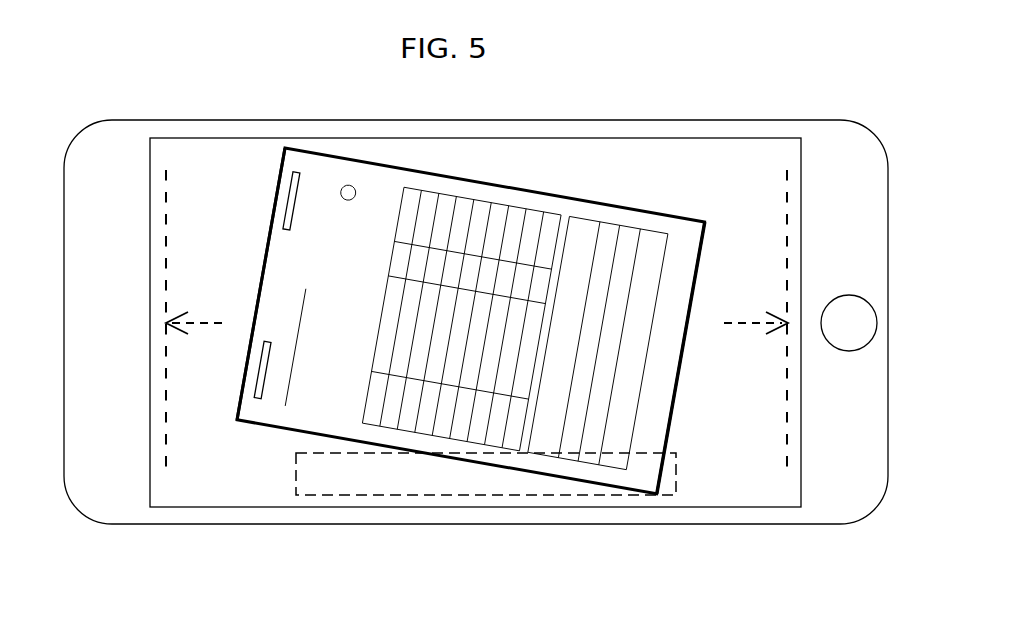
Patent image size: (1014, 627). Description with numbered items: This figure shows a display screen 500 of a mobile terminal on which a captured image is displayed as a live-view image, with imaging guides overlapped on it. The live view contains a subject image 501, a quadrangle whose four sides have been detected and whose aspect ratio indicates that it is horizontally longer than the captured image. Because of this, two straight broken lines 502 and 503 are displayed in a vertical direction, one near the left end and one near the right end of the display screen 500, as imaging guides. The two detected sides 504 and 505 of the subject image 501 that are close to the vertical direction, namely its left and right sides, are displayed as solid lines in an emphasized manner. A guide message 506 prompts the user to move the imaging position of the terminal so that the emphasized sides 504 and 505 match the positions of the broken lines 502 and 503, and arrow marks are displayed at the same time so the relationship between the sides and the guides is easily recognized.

The display screen 500 is at (150, 170).
The subject image 501 is at (572, 199).
The straight broken line 502 is at (167, 441).
The straight broken line 503 is at (789, 441).
The side 504 is at (266, 250).
The side 505 is at (670, 423).
The guide message 506 is at (393, 495).